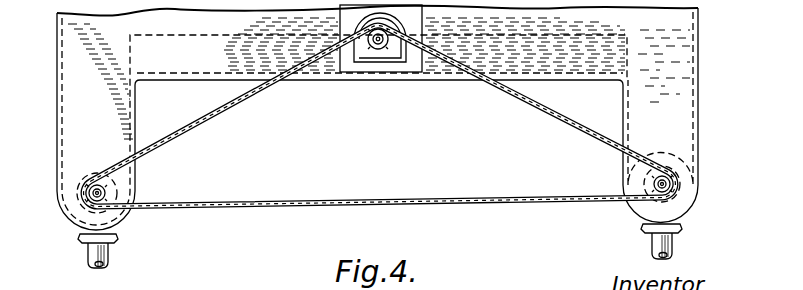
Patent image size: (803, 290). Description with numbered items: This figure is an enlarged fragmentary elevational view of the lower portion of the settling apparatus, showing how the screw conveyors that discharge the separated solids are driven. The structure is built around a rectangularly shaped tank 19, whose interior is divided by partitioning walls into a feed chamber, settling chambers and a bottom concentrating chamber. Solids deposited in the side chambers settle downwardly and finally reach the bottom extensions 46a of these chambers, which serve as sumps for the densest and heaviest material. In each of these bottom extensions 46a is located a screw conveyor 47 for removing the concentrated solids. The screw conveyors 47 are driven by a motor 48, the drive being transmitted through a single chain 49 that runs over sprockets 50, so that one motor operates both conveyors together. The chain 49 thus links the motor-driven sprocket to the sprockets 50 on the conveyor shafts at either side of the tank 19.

The tank 19 is at (607, 50).
The bottom extensions of side chambers 46a is at (718, 118).
The screw conveyors 47 is at (75, 190).
The motor 48 is at (395, 24).
The chain 49 is at (503, 95).
The sprockets 50 is at (104, 194).